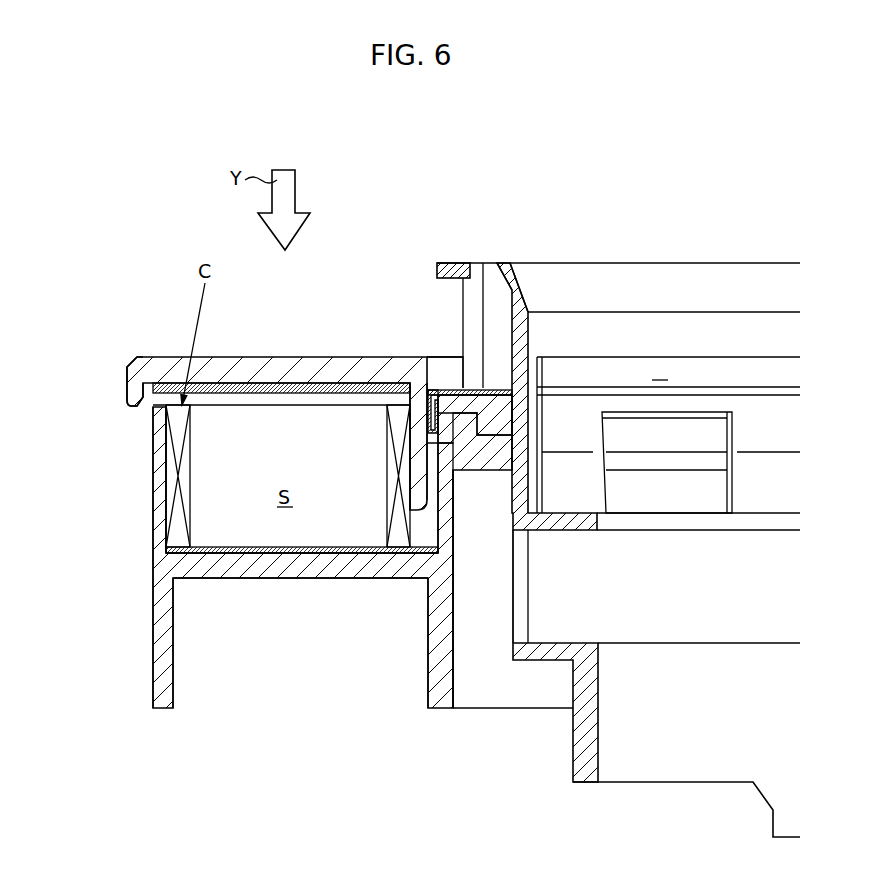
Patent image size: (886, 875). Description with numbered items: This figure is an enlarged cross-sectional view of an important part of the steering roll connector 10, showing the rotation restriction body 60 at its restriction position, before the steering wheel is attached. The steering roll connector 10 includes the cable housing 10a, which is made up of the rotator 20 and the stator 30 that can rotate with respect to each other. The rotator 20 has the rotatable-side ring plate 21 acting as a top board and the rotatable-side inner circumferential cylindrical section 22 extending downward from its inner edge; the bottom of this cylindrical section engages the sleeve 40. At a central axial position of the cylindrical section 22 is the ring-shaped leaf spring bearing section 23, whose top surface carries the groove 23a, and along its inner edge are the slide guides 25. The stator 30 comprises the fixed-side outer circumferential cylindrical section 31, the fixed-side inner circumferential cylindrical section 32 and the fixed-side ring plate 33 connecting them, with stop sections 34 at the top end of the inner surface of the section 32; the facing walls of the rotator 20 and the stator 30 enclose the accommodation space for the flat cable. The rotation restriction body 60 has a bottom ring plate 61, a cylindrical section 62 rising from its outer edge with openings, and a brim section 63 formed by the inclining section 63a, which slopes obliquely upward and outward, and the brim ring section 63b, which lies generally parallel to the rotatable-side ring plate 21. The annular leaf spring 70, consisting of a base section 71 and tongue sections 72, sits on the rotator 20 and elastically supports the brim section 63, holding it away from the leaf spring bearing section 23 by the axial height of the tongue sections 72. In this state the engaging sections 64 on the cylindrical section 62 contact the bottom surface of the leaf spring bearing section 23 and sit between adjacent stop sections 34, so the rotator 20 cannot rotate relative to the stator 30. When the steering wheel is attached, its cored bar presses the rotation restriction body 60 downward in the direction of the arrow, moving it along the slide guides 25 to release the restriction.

The steering roll connector 10 is at (122, 240).
The cable housing 10a is at (68, 400).
The rotator 20 is at (127, 388).
The rotatable-side ring plate 21 is at (175, 365).
The rotatable-side inner circumferential cylindrical section 22 is at (417, 473).
The leaf spring bearing section 23 is at (446, 390).
The groove 23a is at (425, 428).
The slide guides 25 is at (593, 495).
The stator 30 is at (150, 478).
The fixed-side outer circumferential cylindrical section 31 is at (172, 675).
The fixed-side inner circumferential cylindrical section 32 is at (432, 680).
The fixed-side ring plate 33 is at (287, 573).
The stop sections 34 is at (483, 457).
The sleeve 40 is at (702, 770).
The rotation restriction body 60 is at (618, 402).
The bottom ring plate 61 is at (592, 520).
The cylindrical section 62 is at (747, 343).
The brim section 63 is at (487, 274).
The inclining section 63a is at (530, 285).
The brim ring section 63b is at (463, 285).
The engaging sections 64 is at (497, 427).
The annular leaf spring 70 is at (420, 215).
The base section 71 is at (428, 390).
The tongue sections 72 is at (460, 388).